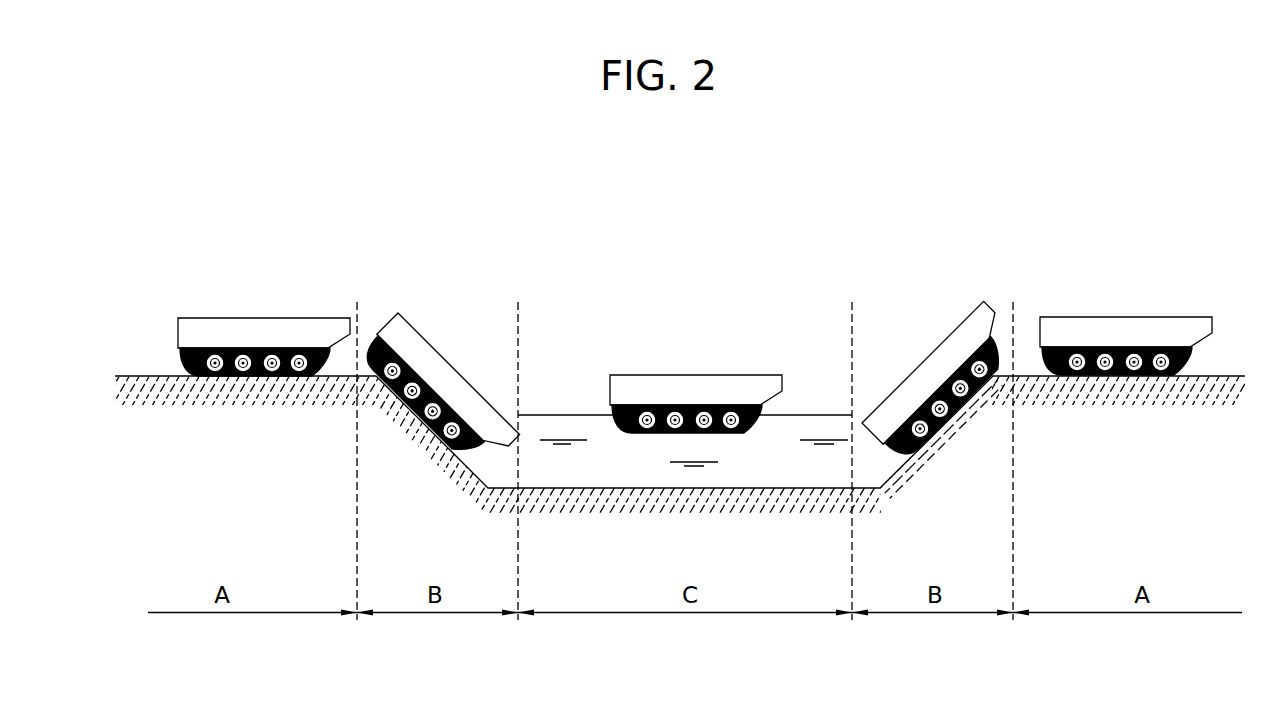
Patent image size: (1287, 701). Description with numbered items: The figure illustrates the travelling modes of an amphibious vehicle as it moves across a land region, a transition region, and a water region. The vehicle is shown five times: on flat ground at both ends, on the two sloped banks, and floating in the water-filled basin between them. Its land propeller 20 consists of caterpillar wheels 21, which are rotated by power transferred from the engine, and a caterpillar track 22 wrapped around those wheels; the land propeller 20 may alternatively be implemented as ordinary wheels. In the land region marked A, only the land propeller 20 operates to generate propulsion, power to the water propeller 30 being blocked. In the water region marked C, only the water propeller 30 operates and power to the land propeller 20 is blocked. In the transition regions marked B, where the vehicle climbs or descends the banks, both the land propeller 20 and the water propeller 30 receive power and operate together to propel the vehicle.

The land propeller 20 is at (264, 308).
The caterpillar wheels 21 is at (264, 314).
The caterpillar track 22 is at (255, 328).
The water propeller 30 is at (610, 408).